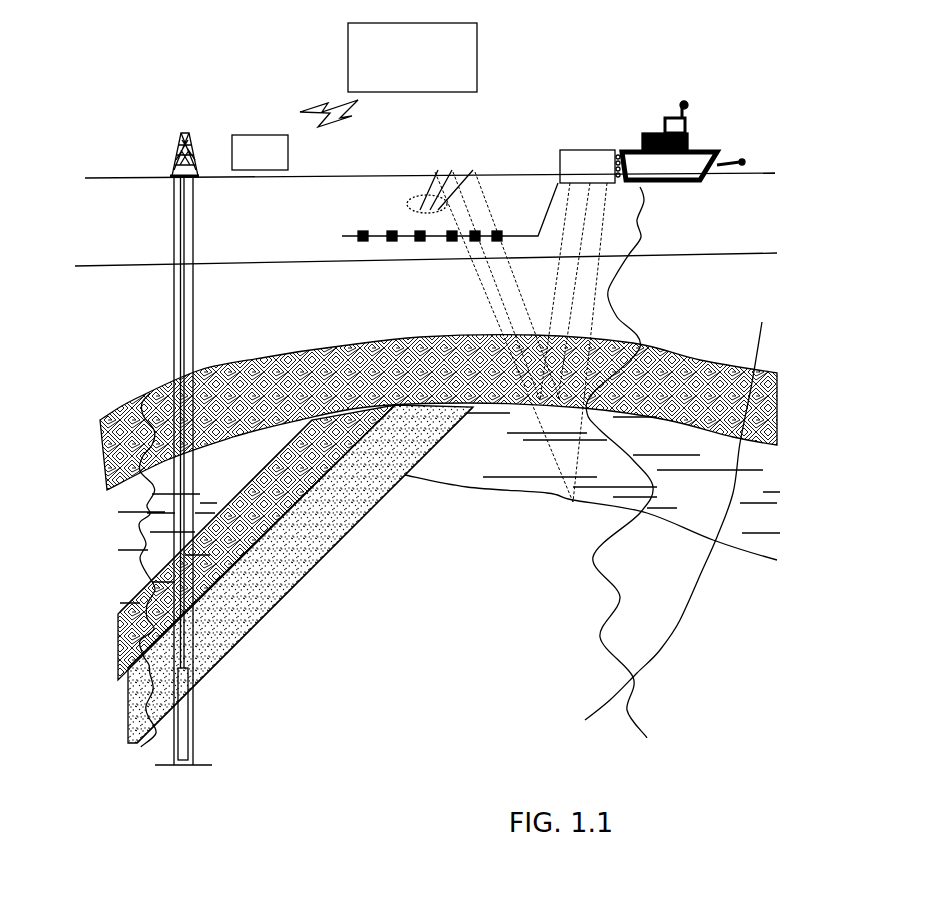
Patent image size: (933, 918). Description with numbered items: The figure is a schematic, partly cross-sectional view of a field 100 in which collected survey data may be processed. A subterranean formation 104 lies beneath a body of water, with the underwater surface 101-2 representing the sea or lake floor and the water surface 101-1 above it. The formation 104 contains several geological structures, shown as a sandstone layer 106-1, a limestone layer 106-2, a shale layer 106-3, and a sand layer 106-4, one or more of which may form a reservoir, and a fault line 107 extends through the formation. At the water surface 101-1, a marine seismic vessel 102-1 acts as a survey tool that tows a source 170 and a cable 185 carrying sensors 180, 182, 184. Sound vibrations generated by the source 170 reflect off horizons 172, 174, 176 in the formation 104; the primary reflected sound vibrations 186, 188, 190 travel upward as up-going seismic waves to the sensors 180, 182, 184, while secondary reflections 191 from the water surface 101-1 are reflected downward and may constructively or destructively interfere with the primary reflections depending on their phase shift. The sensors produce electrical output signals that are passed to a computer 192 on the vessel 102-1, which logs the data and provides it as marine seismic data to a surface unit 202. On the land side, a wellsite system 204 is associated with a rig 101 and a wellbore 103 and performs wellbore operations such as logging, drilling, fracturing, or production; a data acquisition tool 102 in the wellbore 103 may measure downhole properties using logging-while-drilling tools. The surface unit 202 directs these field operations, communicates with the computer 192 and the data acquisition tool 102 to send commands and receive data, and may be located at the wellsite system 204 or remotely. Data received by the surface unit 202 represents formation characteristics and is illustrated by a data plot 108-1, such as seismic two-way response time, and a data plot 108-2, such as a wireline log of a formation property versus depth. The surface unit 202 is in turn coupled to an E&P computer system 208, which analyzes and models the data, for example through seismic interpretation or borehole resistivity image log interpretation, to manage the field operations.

The field 100 is at (827, 98).
The rig 101 is at (175, 118).
The water surface 101-1 is at (745, 167).
The underwater surface 101-2 is at (743, 252).
The data acquisition tool 102 is at (192, 717).
The marine seismic vessel 102-1 is at (641, 128).
The wellbore 103 is at (172, 348).
The subterranean formation 104 is at (591, 524).
The sandstone layer 106-1 is at (438, 412).
The limestone layer 106-2 is at (449, 508).
The shale layer 106-3 is at (256, 542).
The sand layer 106-4 is at (300, 574).
The fault line 107 is at (753, 337).
The data plot 108-1 is at (620, 602).
The data plot 108-2 is at (142, 537).
The source 170 is at (478, 326).
The horizon 172 is at (277, 353).
The horizon 174 is at (373, 403).
The horizon 176 is at (550, 497).
The sensor 180 is at (415, 228).
The sensor 182 is at (387, 232).
The sensor 184 is at (360, 240).
The cable 185 is at (543, 212).
The primary reflected sound vibration 186 is at (495, 325).
The primary reflected sound vibration 188 is at (510, 313).
The primary reflected sound vibration 190 is at (528, 310).
The secondary reflection 191 is at (408, 195).
The computer 192 is at (665, 142).
The surface unit 202 is at (260, 152).
The wellsite system 204 is at (128, 129).
The E&P computer system 208 is at (388, 75).